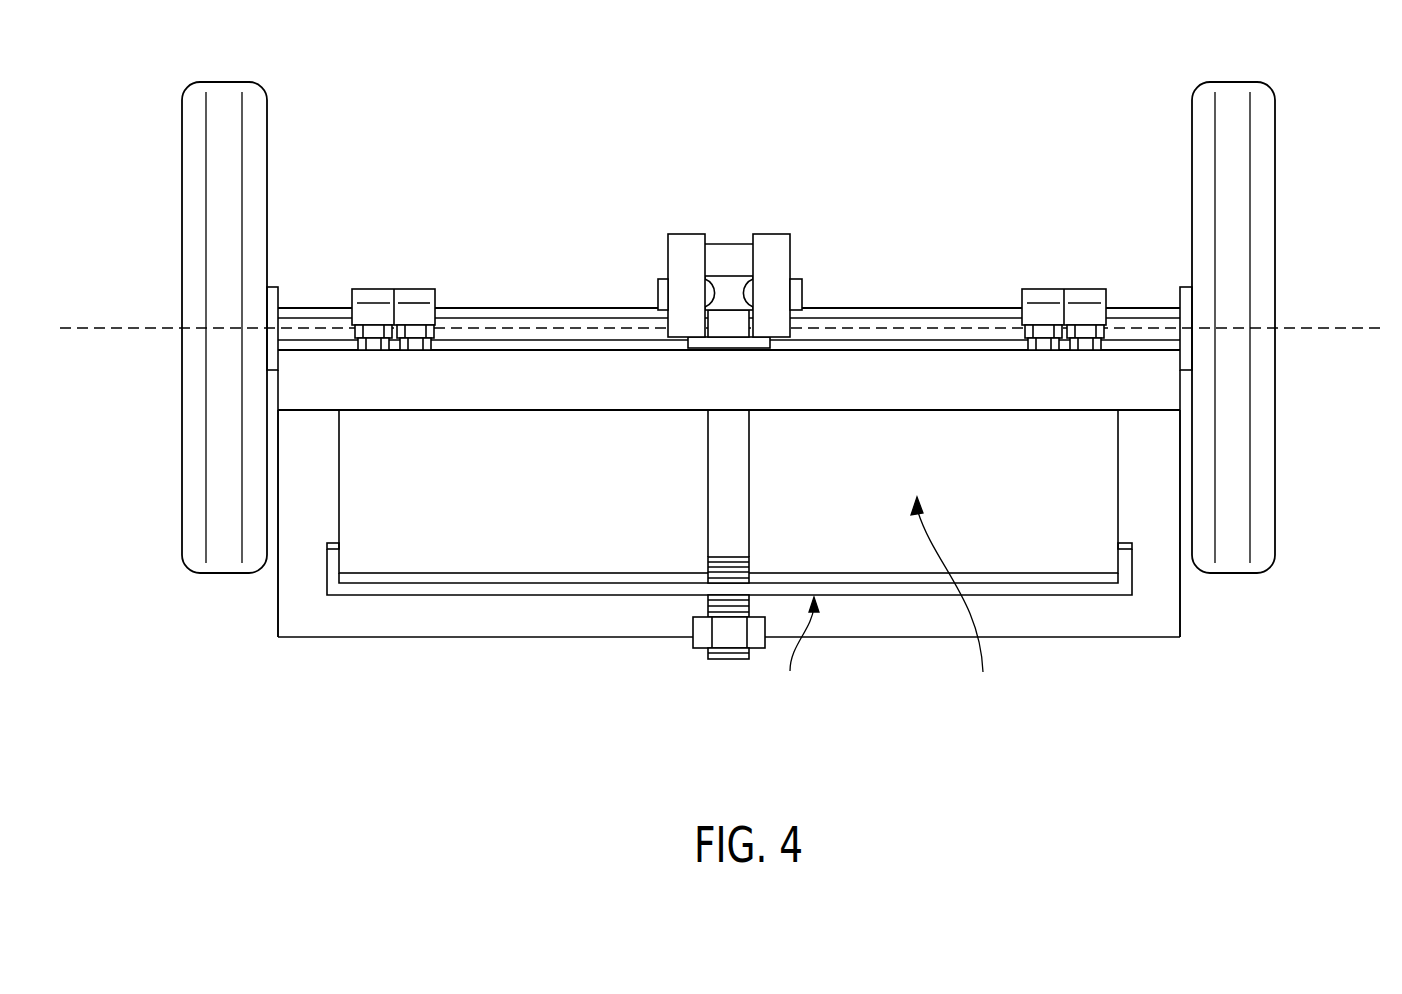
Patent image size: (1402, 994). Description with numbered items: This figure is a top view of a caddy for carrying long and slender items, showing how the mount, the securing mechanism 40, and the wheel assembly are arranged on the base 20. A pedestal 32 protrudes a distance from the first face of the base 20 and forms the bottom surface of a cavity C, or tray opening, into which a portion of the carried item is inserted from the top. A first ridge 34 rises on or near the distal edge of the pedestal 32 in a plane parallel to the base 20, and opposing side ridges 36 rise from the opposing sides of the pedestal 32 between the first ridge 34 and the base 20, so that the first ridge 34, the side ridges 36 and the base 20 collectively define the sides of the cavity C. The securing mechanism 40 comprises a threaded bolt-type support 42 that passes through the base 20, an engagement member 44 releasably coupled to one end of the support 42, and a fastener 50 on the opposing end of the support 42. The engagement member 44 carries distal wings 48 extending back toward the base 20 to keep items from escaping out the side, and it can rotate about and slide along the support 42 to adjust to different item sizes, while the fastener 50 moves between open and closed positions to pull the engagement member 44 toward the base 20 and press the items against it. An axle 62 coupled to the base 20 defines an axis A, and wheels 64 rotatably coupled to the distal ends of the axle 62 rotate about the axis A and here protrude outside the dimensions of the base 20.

The base 20 is at (506, 372).
The pedestal 32 is at (463, 533).
The first ridge 34 is at (510, 615).
The opposing side ridges 36 is at (324, 503).
The securing mechanism 40 is at (800, 650).
The support 42 is at (738, 468).
The engagement member 44 is at (623, 588).
The distal wings 48 is at (333, 583).
The fastener 50 is at (776, 252).
The axle 62 is at (522, 324).
The wheels 64 is at (252, 166).
The axis A is at (110, 325).
The cavity C is at (952, 601).